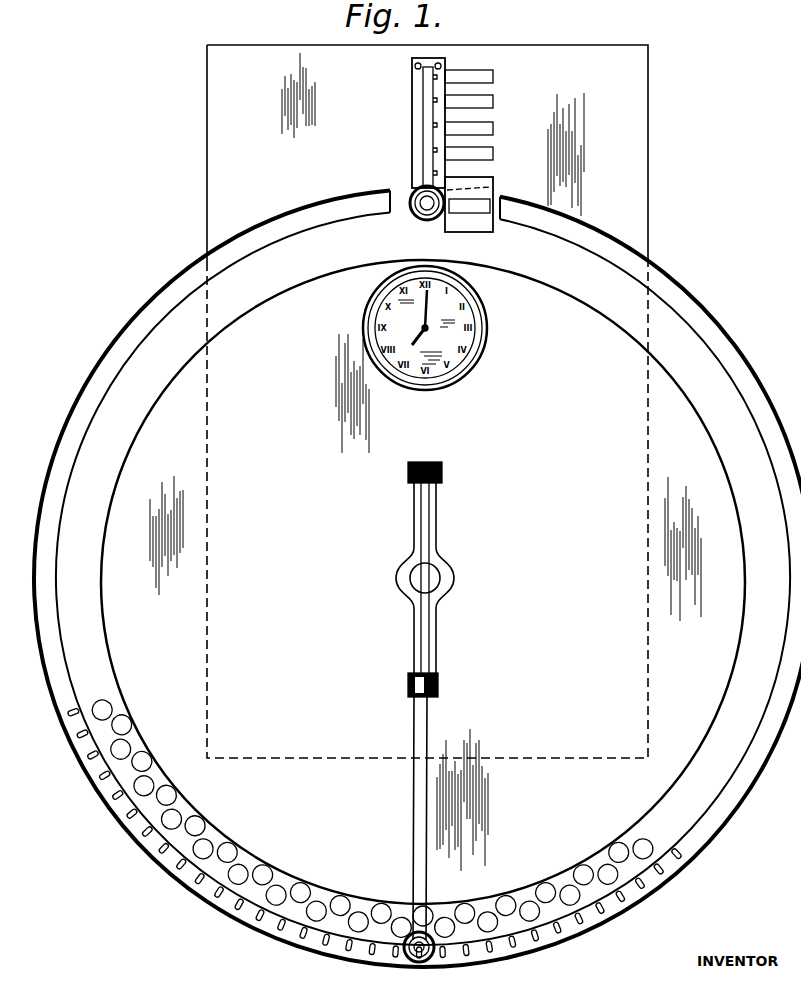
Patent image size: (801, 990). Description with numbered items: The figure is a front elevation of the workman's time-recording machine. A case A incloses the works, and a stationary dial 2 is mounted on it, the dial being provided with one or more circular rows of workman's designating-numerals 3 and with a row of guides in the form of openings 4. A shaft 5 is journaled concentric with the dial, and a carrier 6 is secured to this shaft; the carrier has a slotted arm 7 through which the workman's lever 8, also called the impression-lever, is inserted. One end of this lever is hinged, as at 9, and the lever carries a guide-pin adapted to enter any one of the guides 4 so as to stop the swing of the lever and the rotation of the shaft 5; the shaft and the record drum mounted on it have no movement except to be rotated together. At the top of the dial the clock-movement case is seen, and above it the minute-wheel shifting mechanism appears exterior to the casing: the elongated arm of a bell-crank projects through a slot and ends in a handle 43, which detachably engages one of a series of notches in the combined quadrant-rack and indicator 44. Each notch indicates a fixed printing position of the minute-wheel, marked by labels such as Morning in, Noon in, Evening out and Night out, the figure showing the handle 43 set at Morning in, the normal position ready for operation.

The case A is at (438, 401).
The stationary dial 2 is at (423, 582).
The workman's designating-numerals 3 is at (466, 903).
The guides 4 is at (308, 946).
The shaft 5 is at (433, 578).
The carrier 6 is at (425, 578).
The slotted arm 7 is at (431, 688).
The workman's lever 8 is at (428, 818).
The hinge 9 is at (433, 474).
The handle 43 is at (425, 217).
The quadrant-rack and indicator 44 is at (437, 145).